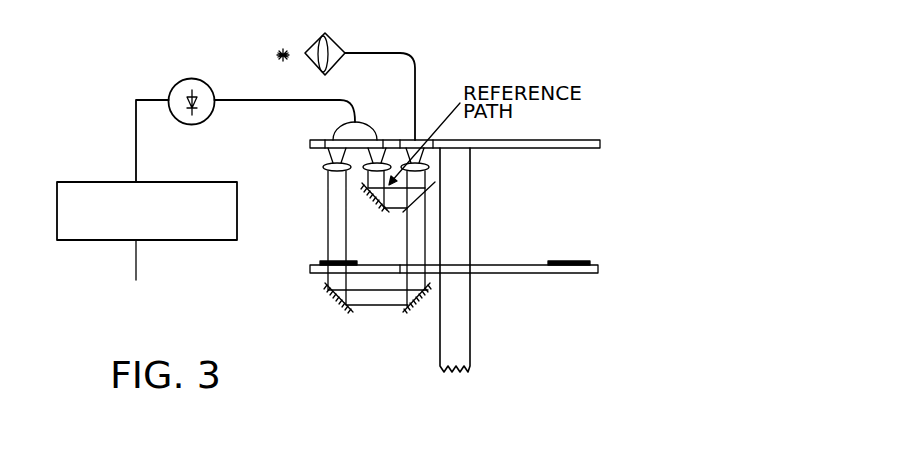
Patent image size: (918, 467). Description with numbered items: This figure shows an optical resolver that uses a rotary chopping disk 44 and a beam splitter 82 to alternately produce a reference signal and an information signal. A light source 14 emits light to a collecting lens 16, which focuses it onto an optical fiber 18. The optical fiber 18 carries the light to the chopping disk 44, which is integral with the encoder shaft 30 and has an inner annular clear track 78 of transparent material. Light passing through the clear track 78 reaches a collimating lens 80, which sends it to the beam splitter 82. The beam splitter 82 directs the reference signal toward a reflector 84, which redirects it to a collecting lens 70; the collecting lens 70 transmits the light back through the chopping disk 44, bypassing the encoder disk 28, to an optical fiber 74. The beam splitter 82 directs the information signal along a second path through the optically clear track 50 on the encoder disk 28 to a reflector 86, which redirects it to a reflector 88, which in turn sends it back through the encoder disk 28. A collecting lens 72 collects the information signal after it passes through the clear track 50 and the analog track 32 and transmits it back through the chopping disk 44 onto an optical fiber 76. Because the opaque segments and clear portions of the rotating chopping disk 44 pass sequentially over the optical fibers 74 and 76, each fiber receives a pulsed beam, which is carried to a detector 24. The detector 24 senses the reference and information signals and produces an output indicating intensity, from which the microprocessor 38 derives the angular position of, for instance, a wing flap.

The light source 14 is at (277, 60).
The collecting lens 16 is at (331, 50).
The optical fiber 18 is at (399, 53).
The detector 24 is at (178, 81).
The encoder disk 28 is at (590, 277).
The encoder shaft 30 is at (463, 337).
The analog track 32 is at (318, 261).
The microprocessor 38 is at (103, 181).
The chopping disk 44 is at (604, 135).
The clear track 50 is at (427, 264).
The collecting lens 70 is at (363, 180).
The collecting lens 72 is at (327, 168).
The optical fiber 74 is at (360, 126).
The optical fiber 76 is at (342, 126).
The clear track 78 is at (405, 140).
The collimating lens 80 is at (428, 168).
The beam splitter 82 is at (433, 183).
The reflector 84 is at (386, 210).
The reflector 86 is at (407, 308).
The reflector 88 is at (338, 307).